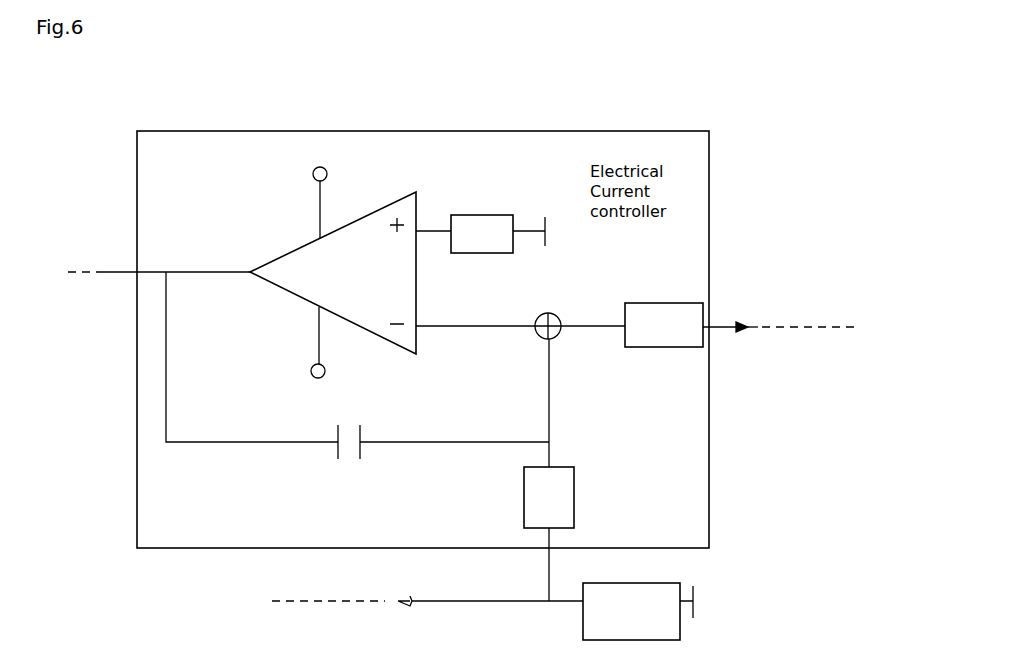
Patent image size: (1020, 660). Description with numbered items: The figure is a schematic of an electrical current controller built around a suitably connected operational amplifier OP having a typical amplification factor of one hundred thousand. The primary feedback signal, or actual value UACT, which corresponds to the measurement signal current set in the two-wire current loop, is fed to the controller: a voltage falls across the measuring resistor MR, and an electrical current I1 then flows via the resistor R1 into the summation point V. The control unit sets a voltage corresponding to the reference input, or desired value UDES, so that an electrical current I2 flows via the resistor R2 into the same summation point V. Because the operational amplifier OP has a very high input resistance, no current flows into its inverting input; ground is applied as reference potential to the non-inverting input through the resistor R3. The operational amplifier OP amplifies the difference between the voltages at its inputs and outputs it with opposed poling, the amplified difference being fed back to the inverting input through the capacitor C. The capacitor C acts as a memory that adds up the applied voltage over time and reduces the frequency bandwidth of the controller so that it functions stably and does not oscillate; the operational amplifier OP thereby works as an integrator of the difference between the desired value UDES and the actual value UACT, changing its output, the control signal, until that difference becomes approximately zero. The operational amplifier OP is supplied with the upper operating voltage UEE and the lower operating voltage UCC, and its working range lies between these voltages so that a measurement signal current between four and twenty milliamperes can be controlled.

The operational amplifier OP is at (373, 285).
The resistor R1 is at (540, 513).
The resistor R2 is at (681, 338).
The resistor R3 is at (498, 244).
The capacitor C is at (362, 436).
The comparator/summation point V is at (541, 313).
The electrical current corresponding to the primary feedback signal I1 is at (549, 383).
The electrical current corresponding to the reference input I2 is at (573, 322).
The lower operating voltage UCC is at (303, 193).
The upper operating voltage UEE is at (301, 342).
The desired value UDES is at (749, 328).
The actual value UACT is at (372, 600).
The measuring resistor MR is at (638, 611).